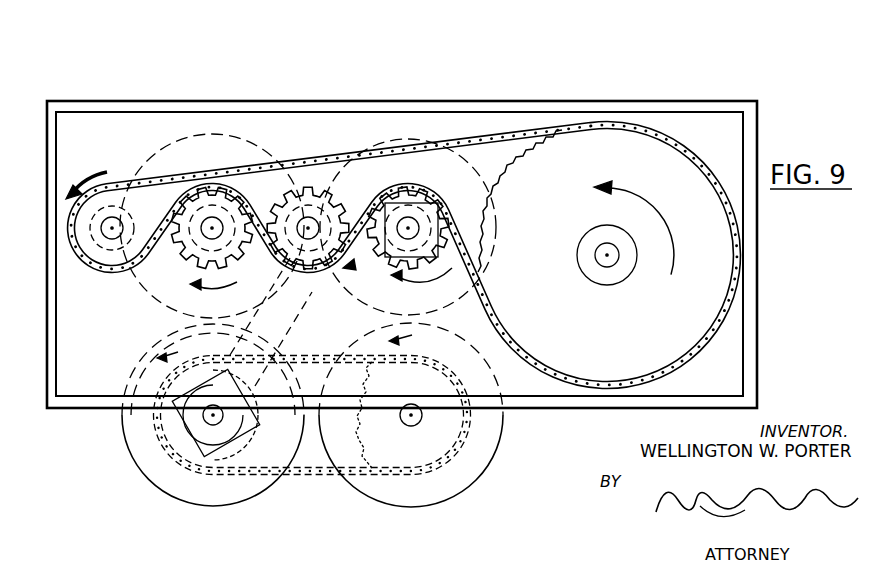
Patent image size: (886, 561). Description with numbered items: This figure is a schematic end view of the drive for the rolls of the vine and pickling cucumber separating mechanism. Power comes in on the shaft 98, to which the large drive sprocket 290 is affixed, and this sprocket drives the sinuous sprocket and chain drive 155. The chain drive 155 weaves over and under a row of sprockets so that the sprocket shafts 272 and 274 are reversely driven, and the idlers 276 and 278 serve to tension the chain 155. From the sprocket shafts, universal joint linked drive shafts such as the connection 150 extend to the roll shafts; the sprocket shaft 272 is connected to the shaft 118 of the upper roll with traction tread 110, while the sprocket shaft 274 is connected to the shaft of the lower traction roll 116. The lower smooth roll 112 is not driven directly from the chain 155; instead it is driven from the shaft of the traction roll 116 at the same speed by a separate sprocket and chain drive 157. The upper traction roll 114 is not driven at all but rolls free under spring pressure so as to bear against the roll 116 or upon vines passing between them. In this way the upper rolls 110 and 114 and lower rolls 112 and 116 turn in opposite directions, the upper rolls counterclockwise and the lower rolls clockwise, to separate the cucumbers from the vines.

The idler 278 is at (127, 190).
The idler 276 is at (244, 250).
The sprocket shaft 274 is at (311, 185).
The sprocket shaft 272 is at (424, 255).
The upper traction roll 114 is at (163, 143).
The upper roll with traction tread 110 is at (396, 133).
The sprocket and chain drive 155 is at (489, 138).
The sprocket 290 is at (614, 167).
The shaft 98 is at (620, 254).
The universal joint linked drive shaft 150 is at (286, 318).
The traction roll 116 is at (148, 482).
The lower smooth roll 112 is at (478, 482).
The shaft 118 is at (425, 418).
The sprocket and chain drive 157 is at (318, 473).